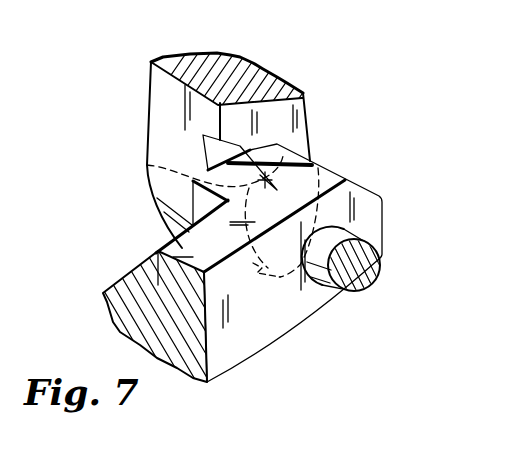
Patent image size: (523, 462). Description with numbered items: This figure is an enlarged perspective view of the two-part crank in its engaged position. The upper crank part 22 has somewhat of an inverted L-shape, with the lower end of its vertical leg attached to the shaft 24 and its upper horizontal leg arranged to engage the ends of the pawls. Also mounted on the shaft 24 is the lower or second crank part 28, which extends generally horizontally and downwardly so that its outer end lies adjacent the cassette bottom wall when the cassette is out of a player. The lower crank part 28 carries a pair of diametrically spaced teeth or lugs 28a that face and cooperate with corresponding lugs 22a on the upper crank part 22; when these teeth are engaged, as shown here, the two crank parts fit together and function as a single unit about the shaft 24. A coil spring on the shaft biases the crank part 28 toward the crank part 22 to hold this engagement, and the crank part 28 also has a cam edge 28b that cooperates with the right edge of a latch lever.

The upper crank part 22 is at (153, 88).
The lugs on upper crank part 22a is at (147, 165).
The shaft 24 is at (357, 273).
The lower crank part 28 is at (233, 363).
The teeth or lugs on lower crank part 28a is at (258, 160).
The cam edge 28b is at (103, 290).